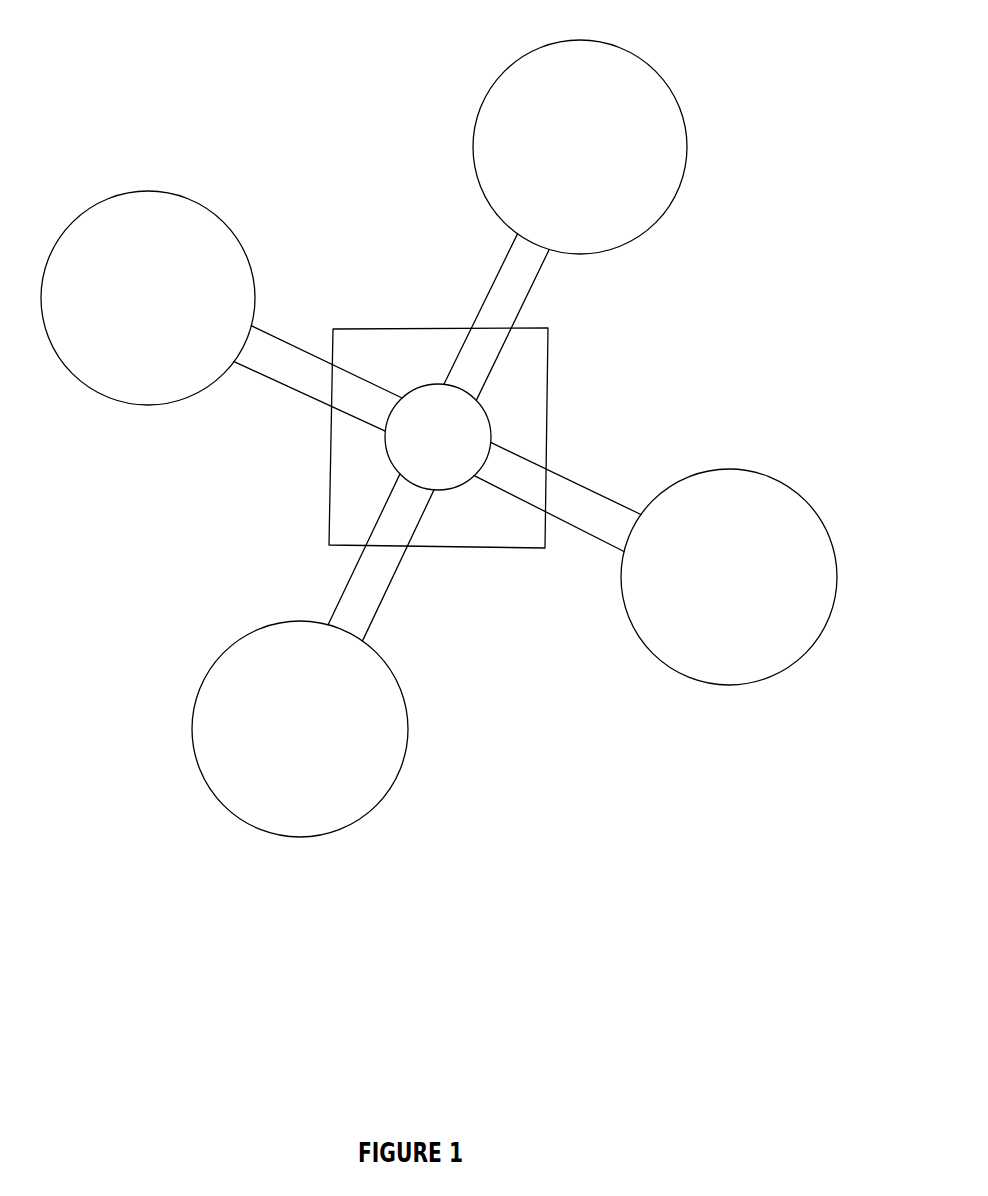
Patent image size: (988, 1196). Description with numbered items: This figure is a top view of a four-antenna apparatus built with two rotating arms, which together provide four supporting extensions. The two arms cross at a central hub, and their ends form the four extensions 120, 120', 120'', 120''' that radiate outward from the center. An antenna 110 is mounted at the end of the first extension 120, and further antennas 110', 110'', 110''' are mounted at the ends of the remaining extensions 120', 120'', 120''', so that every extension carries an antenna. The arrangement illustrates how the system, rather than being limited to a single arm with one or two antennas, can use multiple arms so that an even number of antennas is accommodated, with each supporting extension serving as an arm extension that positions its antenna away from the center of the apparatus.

The antenna 110 is at (623, 144).
The antenna 110' is at (761, 550).
The antenna 110'' is at (352, 729).
The antenna 110''' is at (148, 254).
The extension 120 is at (559, 317).
The extension 120' is at (588, 479).
The extension 120'' is at (412, 557).
The extension 120''' is at (318, 329).